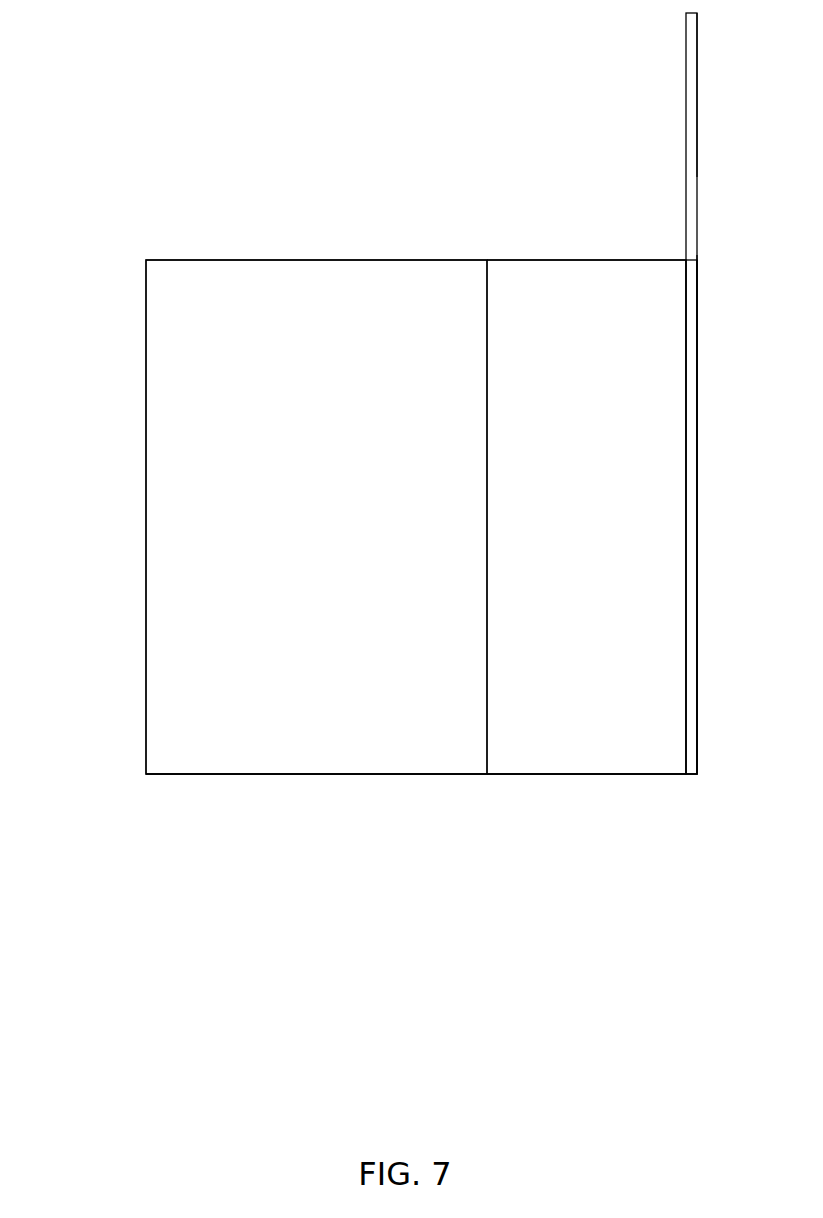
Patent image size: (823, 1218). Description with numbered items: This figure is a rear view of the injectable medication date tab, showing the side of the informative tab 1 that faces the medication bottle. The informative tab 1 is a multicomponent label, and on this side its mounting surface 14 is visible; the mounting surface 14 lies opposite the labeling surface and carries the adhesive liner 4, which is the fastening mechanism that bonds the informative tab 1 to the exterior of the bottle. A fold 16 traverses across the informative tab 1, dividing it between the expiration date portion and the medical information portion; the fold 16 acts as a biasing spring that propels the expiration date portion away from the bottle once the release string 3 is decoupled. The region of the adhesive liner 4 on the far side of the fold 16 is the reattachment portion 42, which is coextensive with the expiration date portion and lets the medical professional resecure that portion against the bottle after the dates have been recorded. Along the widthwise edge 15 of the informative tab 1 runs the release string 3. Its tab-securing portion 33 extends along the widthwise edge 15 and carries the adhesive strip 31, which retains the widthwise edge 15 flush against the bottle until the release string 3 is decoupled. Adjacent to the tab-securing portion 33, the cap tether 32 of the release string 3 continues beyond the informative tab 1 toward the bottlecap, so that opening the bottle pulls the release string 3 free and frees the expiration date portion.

The informative tab 1 is at (100, 503).
The mounting surface 14 is at (170, 344).
The fold 16 is at (486, 310).
The adhesive liner 4 is at (376, 768).
The reattachment portion 42 is at (487, 798).
The release string 3 is at (693, 163).
The widthwise edge 15 is at (686, 453).
The adhesive strip 31 is at (690, 281).
The cap tether 32 is at (710, 13).
The tab-securing portion 33 is at (710, 255).